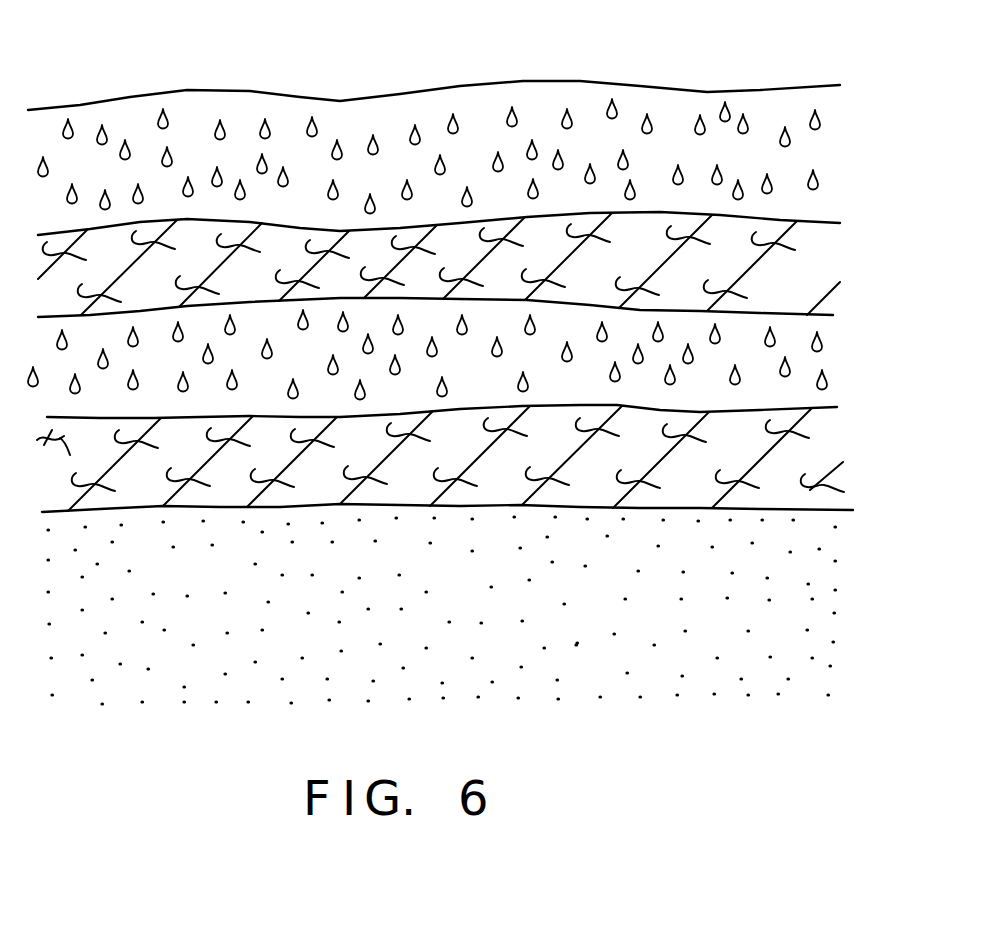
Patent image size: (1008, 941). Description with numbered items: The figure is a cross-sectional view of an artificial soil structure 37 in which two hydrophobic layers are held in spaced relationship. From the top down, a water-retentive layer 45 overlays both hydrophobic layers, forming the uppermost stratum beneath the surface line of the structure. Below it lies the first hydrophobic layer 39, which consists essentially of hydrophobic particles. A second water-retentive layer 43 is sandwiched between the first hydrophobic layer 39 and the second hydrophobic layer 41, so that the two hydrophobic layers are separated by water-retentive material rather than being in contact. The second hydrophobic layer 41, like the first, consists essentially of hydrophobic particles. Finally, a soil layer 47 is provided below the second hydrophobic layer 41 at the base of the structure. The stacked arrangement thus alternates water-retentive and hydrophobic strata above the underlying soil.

The artificial soil structure 37 is at (78, 95).
The water-retentive layer 45 is at (808, 155).
The hydrophobic layer 39 is at (815, 287).
The water-retentive layer 43 is at (808, 367).
The hydrophobic layer 41 is at (815, 460).
The soil layer 47 is at (805, 618).